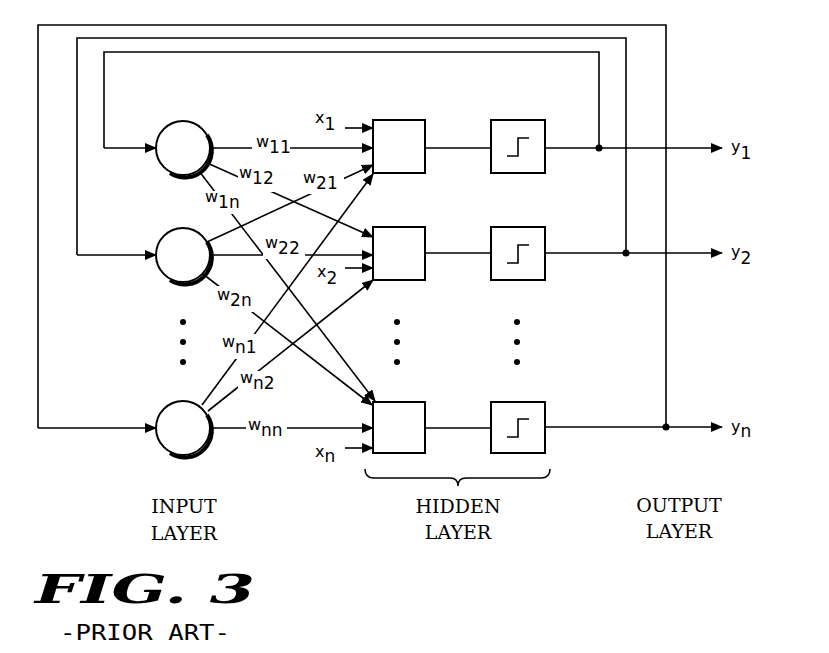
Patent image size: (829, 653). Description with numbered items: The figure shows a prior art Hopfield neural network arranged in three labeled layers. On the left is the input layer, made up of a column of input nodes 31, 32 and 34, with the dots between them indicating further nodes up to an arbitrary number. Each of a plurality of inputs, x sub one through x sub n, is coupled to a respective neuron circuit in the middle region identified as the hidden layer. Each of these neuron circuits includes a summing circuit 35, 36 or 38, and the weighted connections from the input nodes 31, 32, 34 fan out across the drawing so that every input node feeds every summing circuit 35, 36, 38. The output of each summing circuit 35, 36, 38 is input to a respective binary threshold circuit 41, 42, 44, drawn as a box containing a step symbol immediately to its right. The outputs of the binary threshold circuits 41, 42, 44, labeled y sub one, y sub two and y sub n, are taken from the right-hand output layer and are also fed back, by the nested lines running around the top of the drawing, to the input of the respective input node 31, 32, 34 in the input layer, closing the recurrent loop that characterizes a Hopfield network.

The input node 31 is at (162, 127).
The input node 32 is at (162, 234).
The input node 34 is at (162, 407).
The summing circuit 35 is at (409, 119).
The summing circuit 36 is at (411, 283).
The summing circuit 38 is at (412, 400).
The binary threshold circuit 41 is at (527, 119).
The binary threshold circuit 42 is at (532, 283).
The binary threshold circuit 44 is at (532, 400).